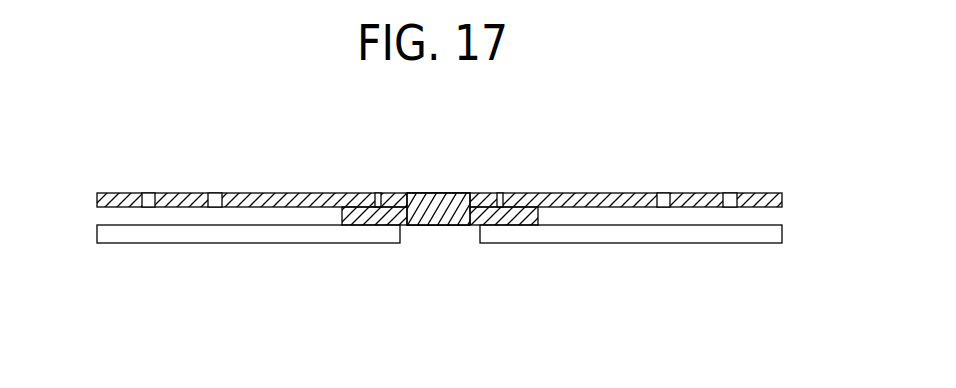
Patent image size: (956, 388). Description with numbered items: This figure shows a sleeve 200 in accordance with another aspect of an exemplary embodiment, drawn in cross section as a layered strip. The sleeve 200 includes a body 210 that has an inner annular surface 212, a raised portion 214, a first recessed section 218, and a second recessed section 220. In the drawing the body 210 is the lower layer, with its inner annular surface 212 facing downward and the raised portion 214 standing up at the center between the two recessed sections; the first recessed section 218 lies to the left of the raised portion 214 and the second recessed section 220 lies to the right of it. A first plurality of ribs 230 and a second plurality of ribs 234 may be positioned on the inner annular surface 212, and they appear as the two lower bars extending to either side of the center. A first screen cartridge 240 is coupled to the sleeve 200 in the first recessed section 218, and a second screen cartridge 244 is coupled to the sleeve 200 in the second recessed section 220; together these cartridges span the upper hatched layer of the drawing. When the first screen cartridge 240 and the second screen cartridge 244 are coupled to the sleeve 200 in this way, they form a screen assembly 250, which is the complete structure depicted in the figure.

The sleeve 200 is at (442, 283).
The body 210 is at (439, 279).
The inner annular surface 212 is at (452, 226).
The raised portion 214 is at (442, 193).
The first recessed section 218 is at (375, 193).
The second recessed section 220 is at (503, 193).
The first plurality of ribs 230 is at (248, 264).
The second plurality of ribs 234 is at (682, 260).
The first screen cartridge 240 is at (164, 178).
The second screen cartridge 244 is at (720, 164).
The screen assembly 250 is at (142, 110).